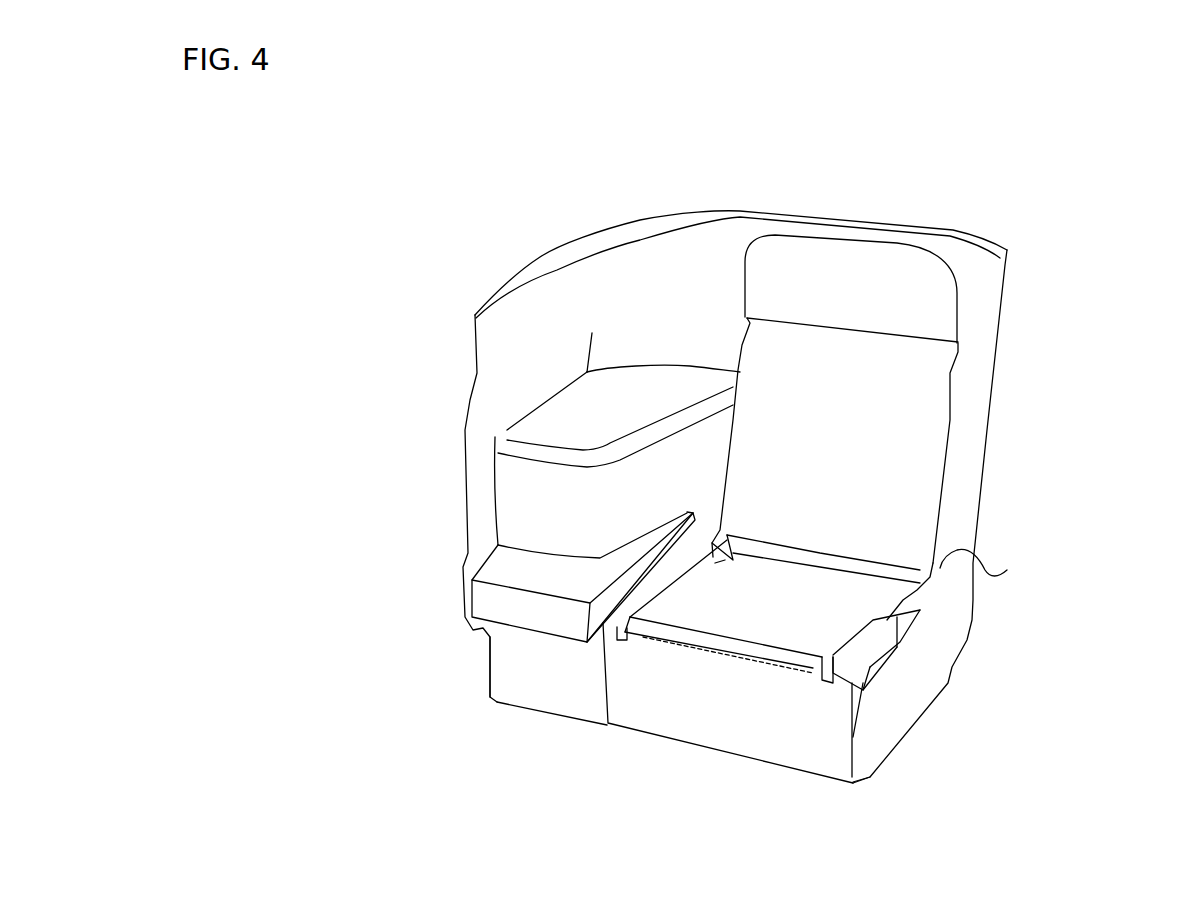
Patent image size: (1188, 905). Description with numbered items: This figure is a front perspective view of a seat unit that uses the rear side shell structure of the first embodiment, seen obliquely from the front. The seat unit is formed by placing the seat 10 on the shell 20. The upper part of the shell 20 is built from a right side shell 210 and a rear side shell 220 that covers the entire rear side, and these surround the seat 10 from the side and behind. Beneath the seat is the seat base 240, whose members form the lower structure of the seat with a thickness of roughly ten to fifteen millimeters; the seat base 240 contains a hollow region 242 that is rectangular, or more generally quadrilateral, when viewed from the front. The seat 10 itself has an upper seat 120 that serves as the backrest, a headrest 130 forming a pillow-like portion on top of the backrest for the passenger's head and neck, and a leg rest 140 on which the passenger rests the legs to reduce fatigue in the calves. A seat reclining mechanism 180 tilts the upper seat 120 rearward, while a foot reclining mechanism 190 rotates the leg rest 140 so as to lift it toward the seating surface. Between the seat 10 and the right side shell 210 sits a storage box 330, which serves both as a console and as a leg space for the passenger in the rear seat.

The seat 10 is at (808, 613).
The shell 20 is at (965, 190).
The upper seat 120 is at (918, 425).
The headrest 130 is at (947, 315).
The leg rest 140 is at (667, 727).
The seat reclining mechanism 180 is at (1007, 570).
The foot reclining mechanism 190 is at (863, 690).
The right side shell 210 is at (477, 373).
The rear side shell 220 is at (822, 208).
The seat base 240 is at (877, 745).
The hollow region 242 is at (557, 678).
The storage box 330 is at (610, 425).